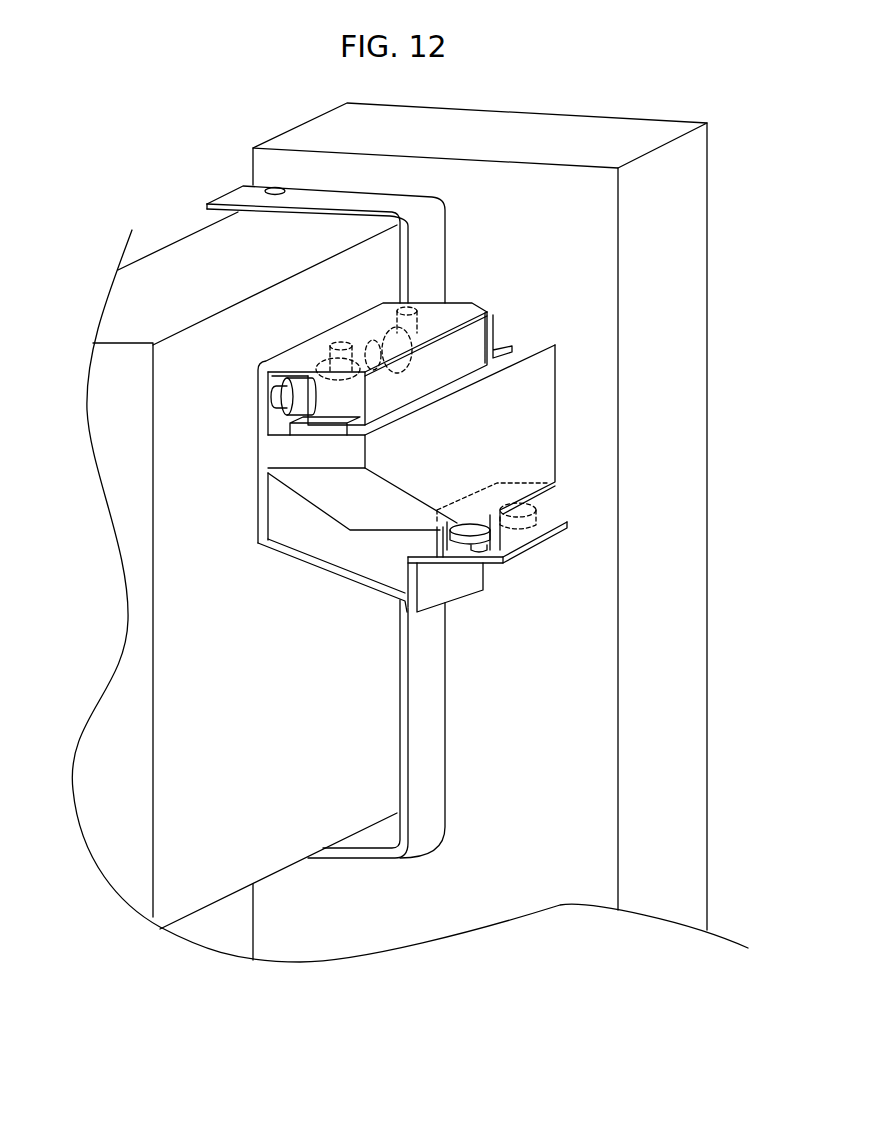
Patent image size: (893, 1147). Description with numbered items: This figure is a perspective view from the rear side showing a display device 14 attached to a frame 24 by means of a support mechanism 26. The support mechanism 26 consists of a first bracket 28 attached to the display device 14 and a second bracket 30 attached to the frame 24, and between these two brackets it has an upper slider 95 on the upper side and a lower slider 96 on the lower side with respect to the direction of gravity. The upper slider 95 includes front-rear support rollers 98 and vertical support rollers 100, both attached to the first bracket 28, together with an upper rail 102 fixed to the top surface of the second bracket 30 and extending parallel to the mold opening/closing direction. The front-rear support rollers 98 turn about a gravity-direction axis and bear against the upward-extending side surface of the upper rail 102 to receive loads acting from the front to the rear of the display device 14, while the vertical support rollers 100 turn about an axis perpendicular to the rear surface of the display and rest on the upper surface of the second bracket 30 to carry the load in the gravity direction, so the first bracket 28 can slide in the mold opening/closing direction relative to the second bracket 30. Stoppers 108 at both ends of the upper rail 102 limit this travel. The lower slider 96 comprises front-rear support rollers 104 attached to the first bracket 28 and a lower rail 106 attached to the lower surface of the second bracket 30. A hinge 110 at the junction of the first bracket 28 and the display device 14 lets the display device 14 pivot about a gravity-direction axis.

The display device 14 is at (200, 260).
The frame 24 is at (562, 133).
The support mechanism 26 is at (463, 450).
The first bracket 28 is at (356, 490).
The second bracket 30 is at (520, 405).
The upper slider 95 is at (373, 362).
The lower slider 96 is at (533, 537).
The front-rear support rollers 98 is at (318, 359).
The vertical support rollers 100 is at (271, 393).
The upper rail 102 is at (399, 383).
The front-rear support rollers 104 is at (478, 526).
The lower rail 106 is at (547, 520).
The stoppers 108 is at (352, 398).
The hinge 110 is at (282, 190).